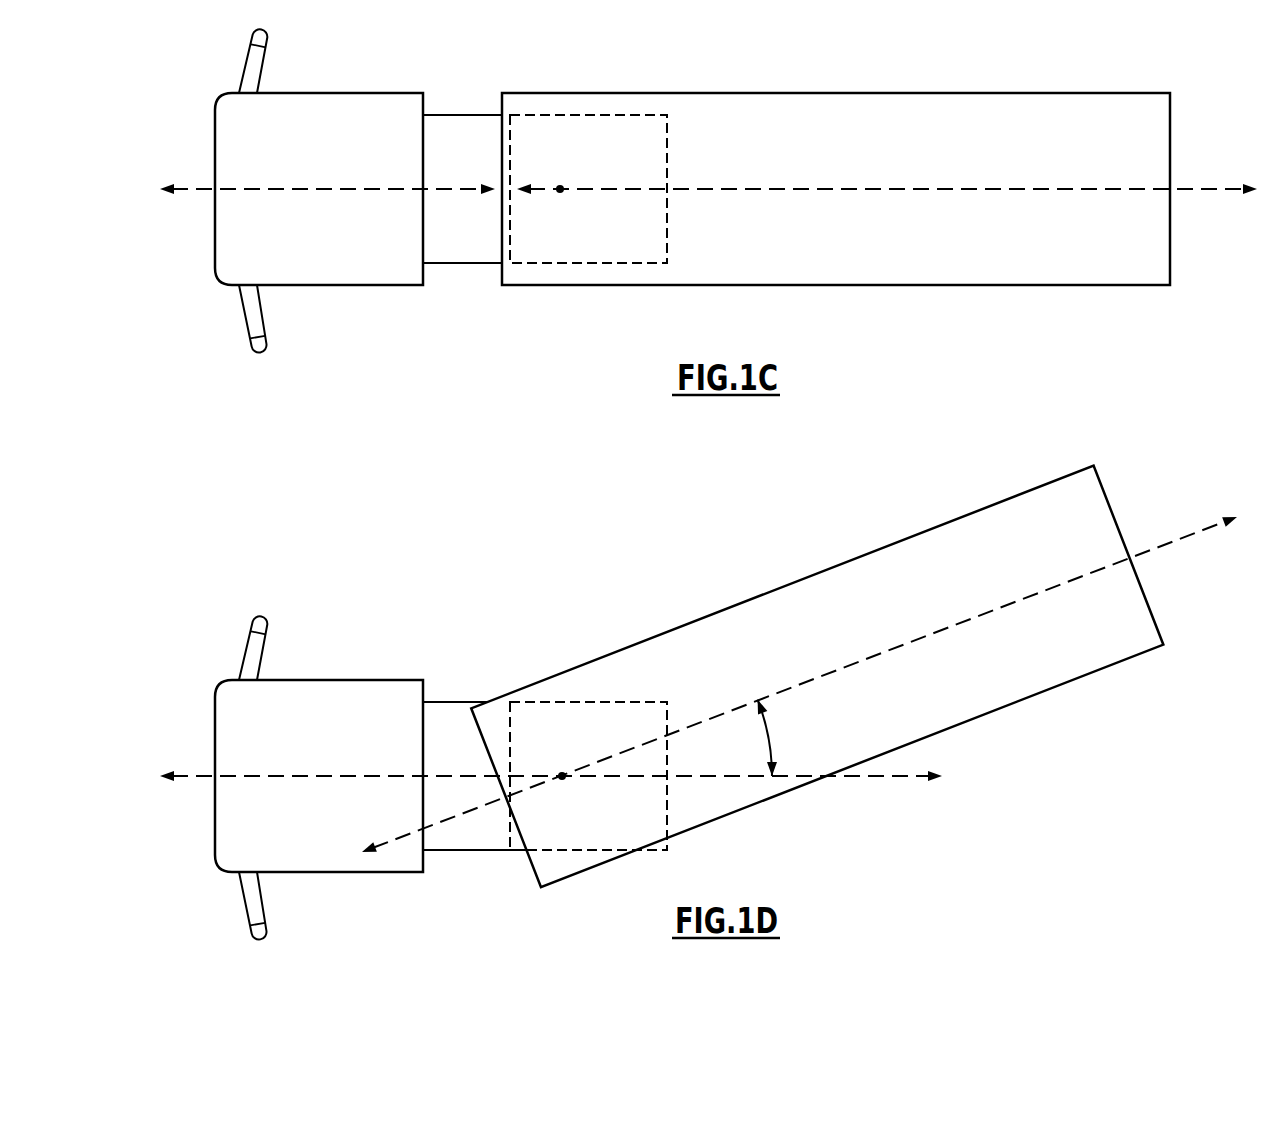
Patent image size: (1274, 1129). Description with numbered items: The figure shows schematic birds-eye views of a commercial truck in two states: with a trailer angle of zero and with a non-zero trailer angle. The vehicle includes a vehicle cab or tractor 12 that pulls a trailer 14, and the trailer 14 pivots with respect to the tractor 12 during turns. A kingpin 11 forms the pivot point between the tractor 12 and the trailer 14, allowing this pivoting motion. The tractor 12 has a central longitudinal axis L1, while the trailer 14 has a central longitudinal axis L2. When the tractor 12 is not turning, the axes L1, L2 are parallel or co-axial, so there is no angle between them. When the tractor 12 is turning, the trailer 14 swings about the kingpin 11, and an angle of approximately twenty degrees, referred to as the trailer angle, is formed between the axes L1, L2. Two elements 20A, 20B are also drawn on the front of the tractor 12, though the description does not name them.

In FIG. 1C, the kingpin 11 is at (560, 189).
In FIG. 1D, the kingpin 11 is at (562, 776).
In FIG. 1C, the tractor 12 is at (233, 133).
In FIG. 1D, the tractor 12 is at (233, 719).
In FIG. 1C, the trailer 14 is at (1093, 112).
In FIG. 1D, the trailer 14 is at (1032, 512).
In FIG. 1C, the first prong / electrode 20A is at (254, 348).
In FIG. 1D, the first prong / electrode 20A is at (254, 935).
In FIG. 1C, the second prong / electrode 20B is at (254, 33).
In FIG. 1D, the second prong / electrode 20B is at (254, 620).
In FIG. 1C, the central longitudinal axis of the tractor L1 is at (278, 192).
In FIG. 1D, the central longitudinal axis of the tractor L1 is at (880, 778).
In FIG. 1C, the central longitudinal axis of the trailer L2 is at (913, 188).
In FIG. 1D, the central longitudinal axis of the trailer L2 is at (1190, 528).